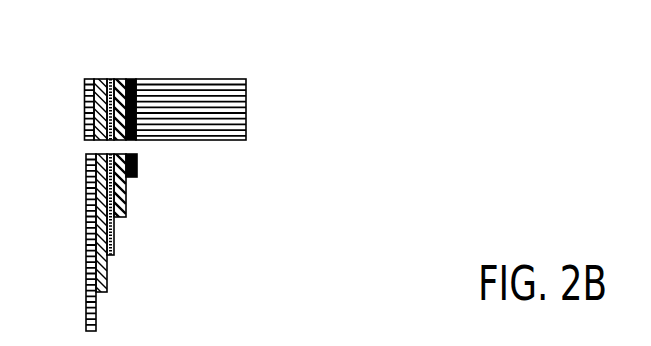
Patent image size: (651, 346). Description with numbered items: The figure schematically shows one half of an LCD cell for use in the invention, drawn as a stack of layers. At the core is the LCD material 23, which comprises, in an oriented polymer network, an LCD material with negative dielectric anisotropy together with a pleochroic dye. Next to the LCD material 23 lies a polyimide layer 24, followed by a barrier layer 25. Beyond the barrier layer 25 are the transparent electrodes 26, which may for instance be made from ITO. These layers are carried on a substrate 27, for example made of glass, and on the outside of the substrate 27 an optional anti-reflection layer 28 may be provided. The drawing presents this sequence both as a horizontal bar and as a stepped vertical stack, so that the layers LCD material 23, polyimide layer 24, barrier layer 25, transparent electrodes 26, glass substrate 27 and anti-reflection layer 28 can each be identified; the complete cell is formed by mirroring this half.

The LCD material 23 is at (199, 79).
The polyimide layer 24 is at (130, 79).
The barrier layer 25 is at (117, 79).
The transparent electrodes 26 is at (114, 240).
The glass substrate 27 is at (107, 272).
The anti-reflection layer 28 is at (96, 313).